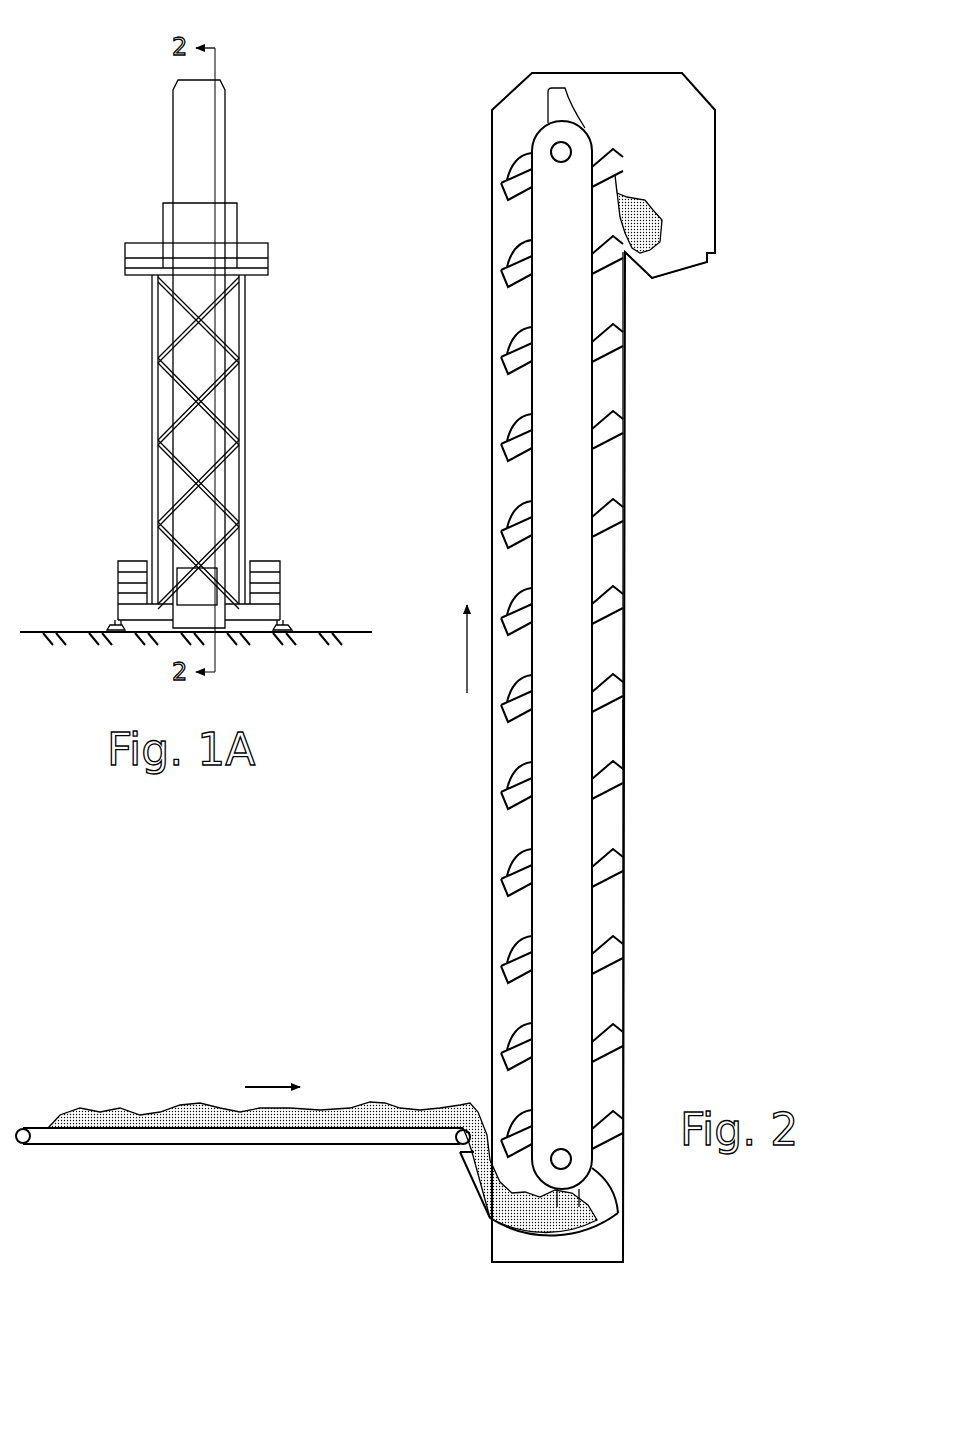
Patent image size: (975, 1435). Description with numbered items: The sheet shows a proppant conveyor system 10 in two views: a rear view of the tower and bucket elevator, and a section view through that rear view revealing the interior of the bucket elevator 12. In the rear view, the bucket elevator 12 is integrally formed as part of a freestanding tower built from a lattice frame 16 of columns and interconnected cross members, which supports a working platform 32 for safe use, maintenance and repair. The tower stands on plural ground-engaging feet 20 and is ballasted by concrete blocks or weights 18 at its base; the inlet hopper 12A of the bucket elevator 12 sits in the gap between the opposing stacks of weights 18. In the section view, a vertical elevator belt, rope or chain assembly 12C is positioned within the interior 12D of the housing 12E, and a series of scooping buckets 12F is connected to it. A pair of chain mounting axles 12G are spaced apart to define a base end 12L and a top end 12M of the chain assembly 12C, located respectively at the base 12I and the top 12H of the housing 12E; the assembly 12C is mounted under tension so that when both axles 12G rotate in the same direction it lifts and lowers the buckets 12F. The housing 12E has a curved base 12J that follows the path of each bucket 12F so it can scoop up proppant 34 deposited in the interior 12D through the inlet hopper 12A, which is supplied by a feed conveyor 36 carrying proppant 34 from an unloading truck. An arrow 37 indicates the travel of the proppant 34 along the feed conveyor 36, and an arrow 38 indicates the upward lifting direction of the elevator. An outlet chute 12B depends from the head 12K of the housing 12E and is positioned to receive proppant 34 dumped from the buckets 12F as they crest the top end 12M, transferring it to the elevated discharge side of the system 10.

In FIG. 1A, the proppant conveyor system 10 is at (117, 87).
In FIG. 2, the proppant conveyor system 10 is at (438, 87).
In FIG. 1A, the bucket elevator 12 is at (192, 150).
In FIG. 2, the bucket elevator 12 is at (492, 150).
In FIG. 1A, the inlet hopper 12A is at (190, 567).
In FIG. 2, the inlet hopper 12A is at (460, 1162).
In FIG. 2, the outlet chute 12B is at (673, 277).
In FIG. 2, the vertical elevator chain assembly 12C is at (593, 563).
In FIG. 2, the interior 12D is at (613, 648).
In FIG. 2, the housing 12E is at (623, 735).
In FIG. 2, the buckets 12F is at (508, 1077).
In FIG. 2, the chain mounting axles 12G is at (570, 148).
In FIG. 2, the top 12H is at (557, 70).
In FIG. 2, the base 12I is at (568, 1236).
In FIG. 2, the base 12J is at (517, 1199).
In FIG. 2, the head 12K is at (707, 100).
In FIG. 2, the base end 12L is at (533, 132).
In FIG. 2, the top end 12M is at (593, 1168).
In FIG. 1A, the lattice frame 16 is at (245, 370).
In FIG. 1A, the weights 18 is at (275, 561).
In FIG. 1A, the ground-engaging feet 20 is at (285, 626).
In FIG. 1A, the platform 32 is at (248, 270).
In FIG. 2, the proppant 34 is at (662, 222).
In FIG. 2, the feed conveyor 36 is at (200, 1143).
In FIG. 2, the feed direction arrow 37 is at (258, 1085).
In FIG. 2, the lift direction arrow 38 is at (467, 652).